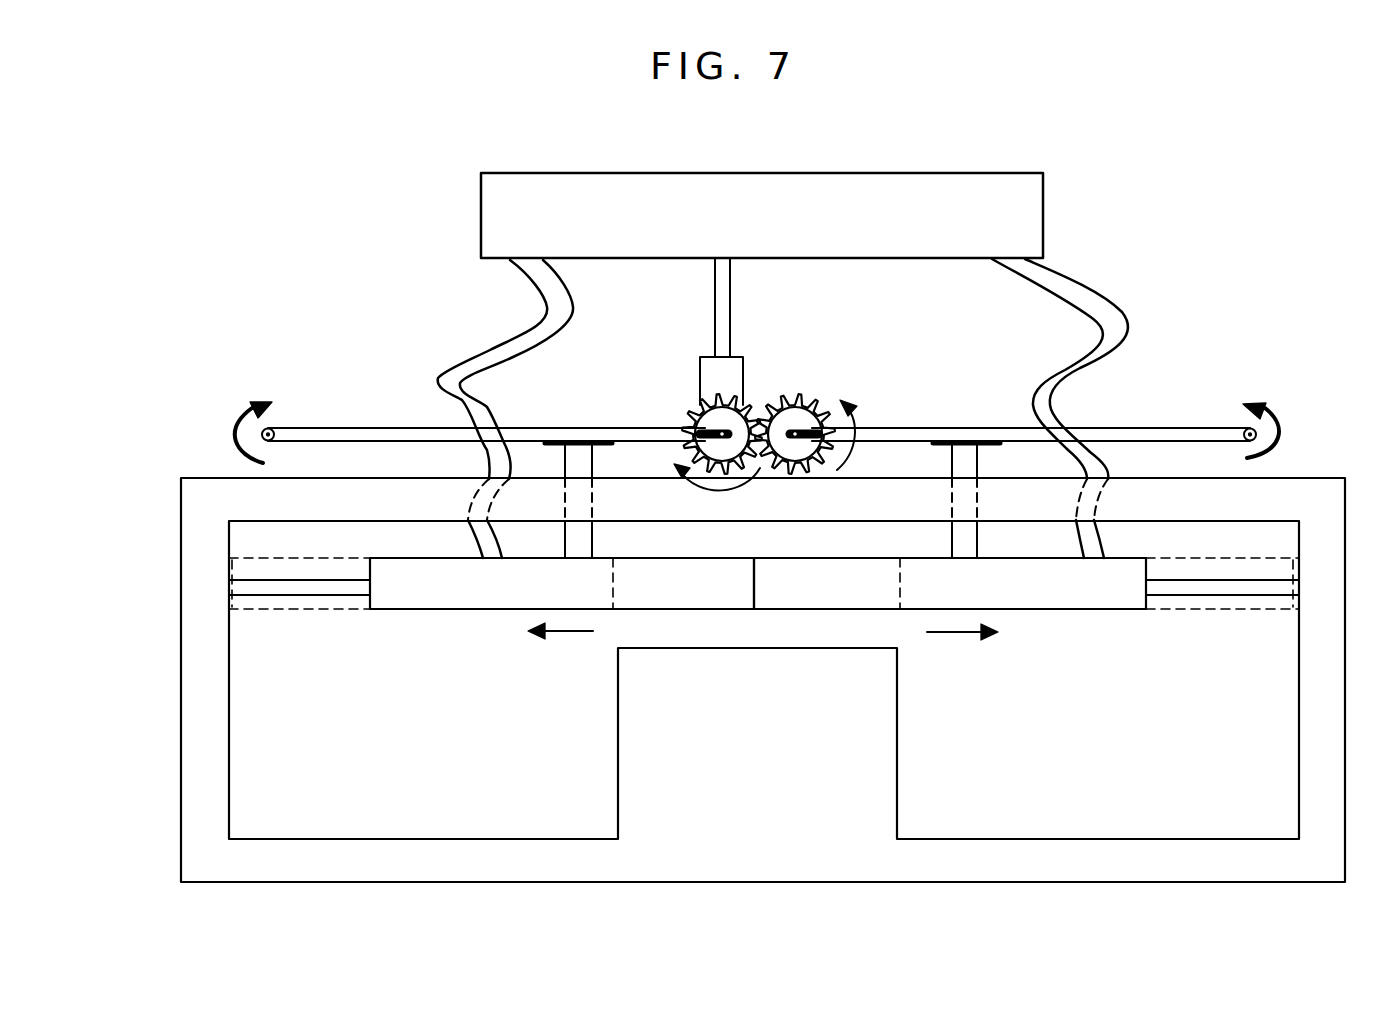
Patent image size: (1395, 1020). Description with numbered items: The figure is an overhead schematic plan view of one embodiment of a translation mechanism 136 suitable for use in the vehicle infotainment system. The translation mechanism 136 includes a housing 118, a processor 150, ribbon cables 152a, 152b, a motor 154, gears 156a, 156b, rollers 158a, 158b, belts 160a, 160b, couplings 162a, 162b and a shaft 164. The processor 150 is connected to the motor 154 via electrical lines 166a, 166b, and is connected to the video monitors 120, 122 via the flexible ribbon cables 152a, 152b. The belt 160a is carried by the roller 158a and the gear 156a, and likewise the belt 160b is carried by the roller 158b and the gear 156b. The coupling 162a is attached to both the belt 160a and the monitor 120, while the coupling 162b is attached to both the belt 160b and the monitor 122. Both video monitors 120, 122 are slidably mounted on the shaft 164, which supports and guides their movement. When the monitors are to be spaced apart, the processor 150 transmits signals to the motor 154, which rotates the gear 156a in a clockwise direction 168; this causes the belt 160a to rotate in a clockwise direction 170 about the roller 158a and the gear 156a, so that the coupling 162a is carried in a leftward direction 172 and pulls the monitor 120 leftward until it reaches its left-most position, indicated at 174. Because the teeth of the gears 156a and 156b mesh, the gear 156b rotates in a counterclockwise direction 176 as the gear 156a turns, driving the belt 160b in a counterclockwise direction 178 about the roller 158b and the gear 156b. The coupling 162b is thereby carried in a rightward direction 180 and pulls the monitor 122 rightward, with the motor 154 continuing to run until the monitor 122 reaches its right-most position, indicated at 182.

The translation mechanism 136 is at (1198, 153).
The housing 118 is at (773, 776).
The processor 150 is at (897, 173).
The ribbon cable 152a is at (477, 350).
The ribbon cable 152b is at (1130, 318).
The motor 154 is at (735, 377).
The gear 156a is at (687, 407).
The gear 156b is at (822, 393).
The roller 158a is at (268, 428).
The roller 158b is at (1247, 433).
The belt 160a is at (552, 427).
The belt 160b is at (997, 425).
The coupling 162a is at (595, 540).
The coupling 162b is at (952, 541).
The shaft 164 is at (318, 592).
The electrical line 166a is at (714, 280).
The electrical line 166b is at (732, 300).
The clockwise direction 168 is at (745, 492).
The clockwise direction 170 is at (230, 432).
The leftward direction 172 is at (558, 634).
The left-most position 174 is at (333, 610).
The counterclockwise direction 176 is at (868, 425).
The counterclockwise direction 178 is at (1283, 430).
The rightward direction 180 is at (962, 636).
The right-most position 182 is at (898, 586).
The video monitor 120 is at (485, 611).
The video monitor 122 is at (1017, 613).